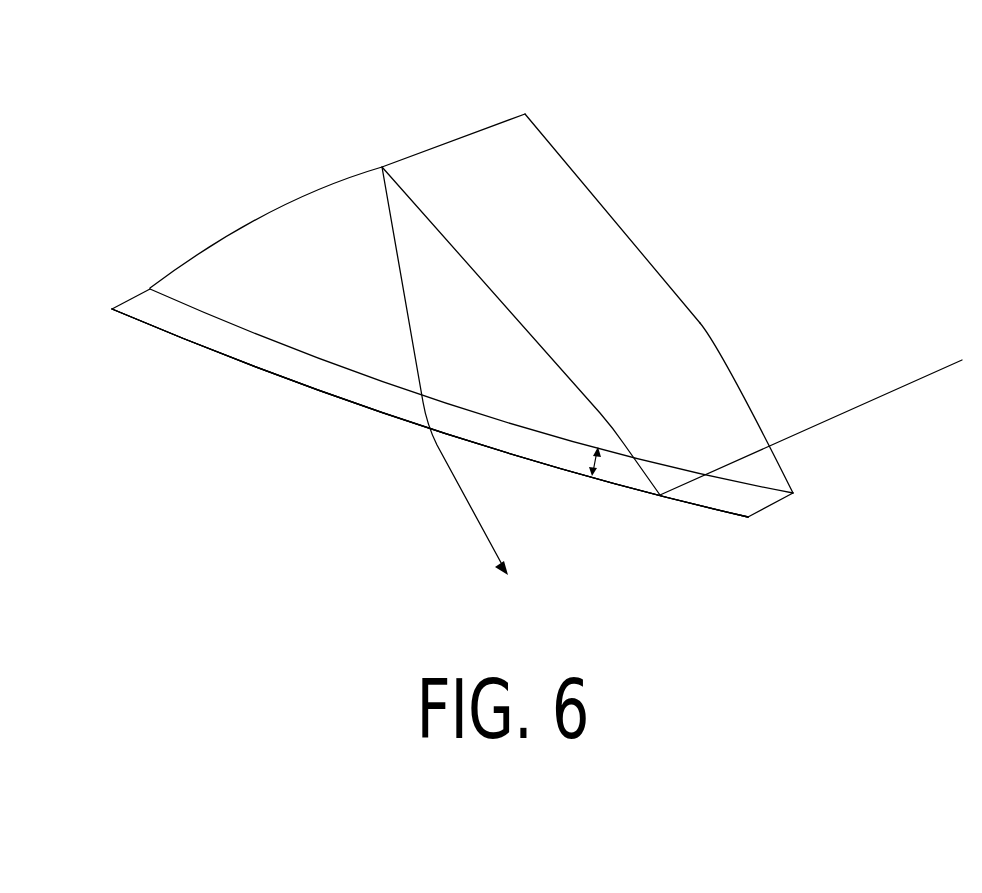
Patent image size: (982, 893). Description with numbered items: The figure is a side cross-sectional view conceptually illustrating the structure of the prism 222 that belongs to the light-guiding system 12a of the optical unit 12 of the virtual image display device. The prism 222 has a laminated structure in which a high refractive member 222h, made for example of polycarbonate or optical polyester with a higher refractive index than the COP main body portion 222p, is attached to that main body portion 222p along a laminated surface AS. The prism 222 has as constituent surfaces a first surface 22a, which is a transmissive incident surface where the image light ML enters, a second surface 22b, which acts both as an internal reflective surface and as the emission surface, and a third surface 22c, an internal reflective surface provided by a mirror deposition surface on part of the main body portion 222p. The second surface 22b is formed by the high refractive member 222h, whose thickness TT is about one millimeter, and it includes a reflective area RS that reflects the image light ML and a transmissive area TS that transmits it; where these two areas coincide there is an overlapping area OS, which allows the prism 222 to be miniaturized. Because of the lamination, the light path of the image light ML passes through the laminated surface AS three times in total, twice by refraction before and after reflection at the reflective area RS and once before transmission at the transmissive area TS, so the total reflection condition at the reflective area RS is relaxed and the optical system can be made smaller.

The optical unit 12 is at (132, 99).
The light-guiding system 12a is at (274, 146).
The first surface 22a is at (768, 437).
The second surface 22b is at (357, 409).
The third surface 22c is at (352, 187).
The prism 222 is at (627, 262).
The main body portion 222p is at (657, 317).
The high refractive member 222h is at (307, 380).
The laminated surface AS is at (240, 333).
The transmissive area TS is at (417, 428).
The overlapping area OS is at (513, 457).
The thickness TT is at (588, 462).
The reflective area RS is at (640, 490).
The image light ML is at (827, 425).